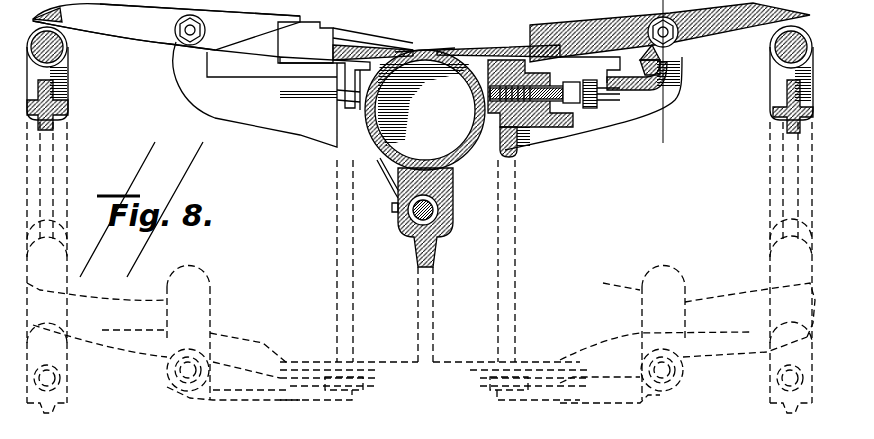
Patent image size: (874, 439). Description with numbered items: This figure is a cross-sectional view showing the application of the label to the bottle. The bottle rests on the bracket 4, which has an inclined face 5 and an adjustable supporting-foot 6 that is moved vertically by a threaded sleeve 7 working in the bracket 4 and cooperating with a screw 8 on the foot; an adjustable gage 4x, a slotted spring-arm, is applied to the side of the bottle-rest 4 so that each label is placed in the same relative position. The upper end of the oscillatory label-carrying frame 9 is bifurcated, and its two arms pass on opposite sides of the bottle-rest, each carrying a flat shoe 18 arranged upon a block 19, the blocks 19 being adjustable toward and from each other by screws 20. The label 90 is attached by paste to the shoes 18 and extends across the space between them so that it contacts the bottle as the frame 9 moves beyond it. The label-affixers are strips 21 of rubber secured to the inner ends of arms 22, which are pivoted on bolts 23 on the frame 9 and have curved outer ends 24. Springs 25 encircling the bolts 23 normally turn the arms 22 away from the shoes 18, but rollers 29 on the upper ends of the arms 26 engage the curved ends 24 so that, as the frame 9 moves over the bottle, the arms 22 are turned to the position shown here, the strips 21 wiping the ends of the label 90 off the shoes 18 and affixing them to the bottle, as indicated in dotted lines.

The curved outer ends 24 is at (166, 30).
The arms 22 is at (593, 30).
The strips 21 is at (338, 52).
The shoes 18 is at (352, 62).
The label 90 is at (422, 50).
The inclined face 5 is at (427, 170).
The bracket 4 is at (453, 190).
The screw 8 is at (438, 218).
The adjustable gage 4x is at (390, 178).
The threaded sleeve 7 is at (395, 223).
The oscillatory label-carrying frame 9 is at (607, 145).
The bolts 23 is at (184, 42).
The rollers 29 is at (67, 58).
The arms 26 is at (63, 100).
The screws 20 is at (592, 100).
The blocks 19 is at (523, 120).
The springs 25 is at (667, 90).
The adjustable supporting-foot 6 is at (674, 77).